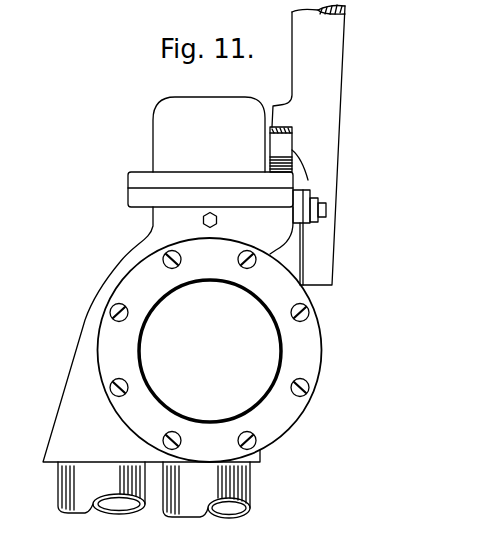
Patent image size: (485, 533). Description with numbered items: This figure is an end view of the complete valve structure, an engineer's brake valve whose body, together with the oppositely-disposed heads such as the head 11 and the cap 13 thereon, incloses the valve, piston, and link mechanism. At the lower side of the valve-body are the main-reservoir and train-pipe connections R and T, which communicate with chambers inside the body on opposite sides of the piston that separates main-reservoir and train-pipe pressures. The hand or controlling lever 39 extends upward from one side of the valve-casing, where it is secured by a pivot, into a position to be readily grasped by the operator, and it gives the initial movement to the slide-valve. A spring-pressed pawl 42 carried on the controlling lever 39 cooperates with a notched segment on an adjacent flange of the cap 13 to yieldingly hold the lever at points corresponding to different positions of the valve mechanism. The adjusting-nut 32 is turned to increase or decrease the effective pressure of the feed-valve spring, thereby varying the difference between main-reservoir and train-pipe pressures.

The head 11 is at (322, 350).
The cap 13 is at (153, 141).
The adjusting-nut 32 is at (327, 207).
The controlling lever 39 is at (327, 58).
The spring-pressed pawl 42 is at (282, 143).
The train-pipe connection T is at (70, 497).
The main-reservoir connection R is at (235, 492).